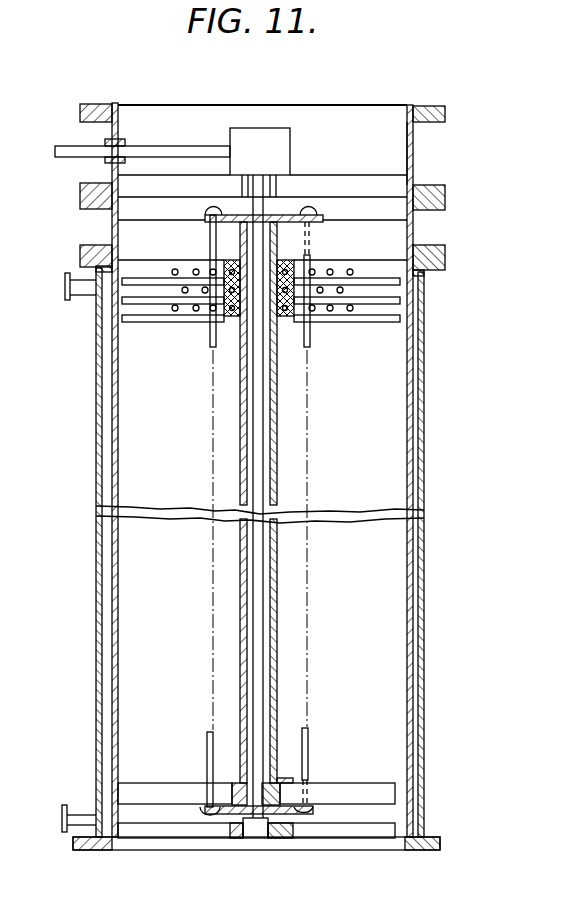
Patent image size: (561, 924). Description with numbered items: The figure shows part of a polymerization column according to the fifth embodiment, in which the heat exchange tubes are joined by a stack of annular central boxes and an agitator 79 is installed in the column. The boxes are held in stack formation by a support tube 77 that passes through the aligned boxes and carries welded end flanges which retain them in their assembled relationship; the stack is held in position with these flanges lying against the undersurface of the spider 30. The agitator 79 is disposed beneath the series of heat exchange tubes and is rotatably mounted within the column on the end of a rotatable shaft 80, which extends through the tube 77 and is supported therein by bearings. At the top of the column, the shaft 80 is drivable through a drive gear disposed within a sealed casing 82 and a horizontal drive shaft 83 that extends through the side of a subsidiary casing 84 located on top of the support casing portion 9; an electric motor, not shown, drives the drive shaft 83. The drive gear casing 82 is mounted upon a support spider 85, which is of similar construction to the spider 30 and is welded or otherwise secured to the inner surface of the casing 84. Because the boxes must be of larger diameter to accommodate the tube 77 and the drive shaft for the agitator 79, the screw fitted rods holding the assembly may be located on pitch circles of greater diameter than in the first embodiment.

The support casing portion 9 is at (112, 222).
The spider 30 is at (380, 218).
The support tube 77 is at (278, 476).
The agitator 79 is at (190, 832).
The rotatable shaft 80 is at (256, 656).
The sealed casing 82 is at (289, 129).
The horizontal drive shaft 83 is at (155, 150).
The subsidiary casing 84 is at (415, 138).
The support spider 85 is at (400, 177).